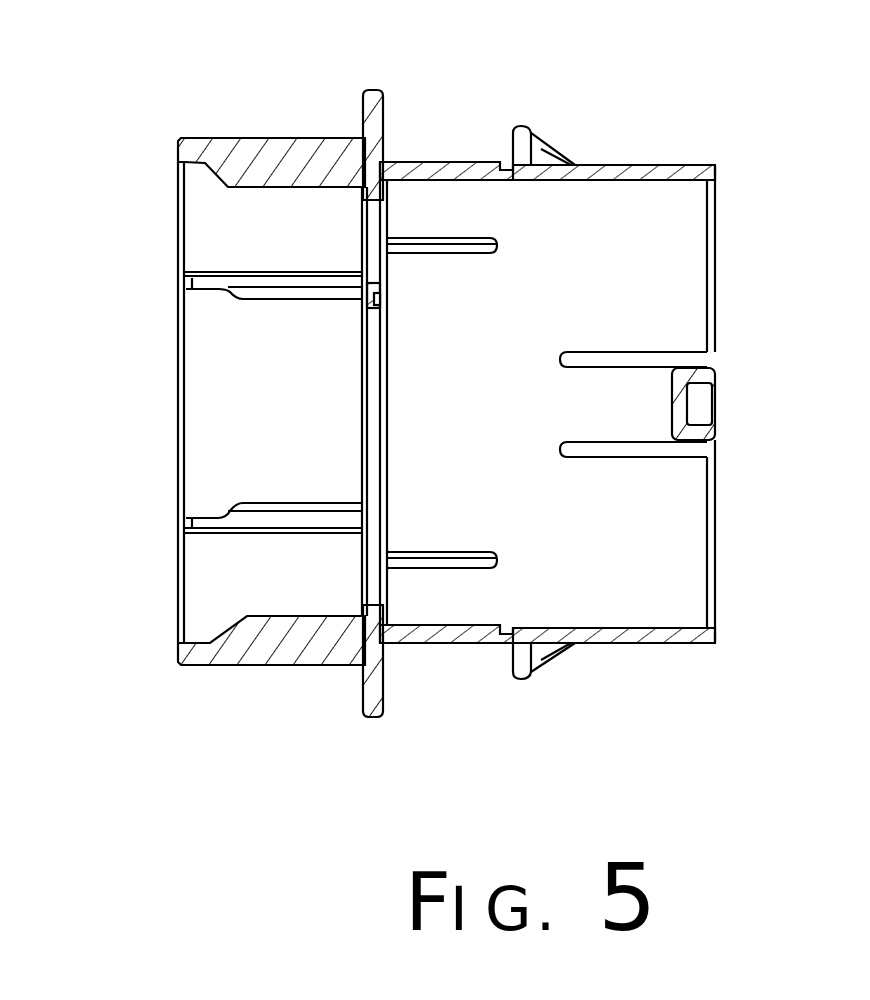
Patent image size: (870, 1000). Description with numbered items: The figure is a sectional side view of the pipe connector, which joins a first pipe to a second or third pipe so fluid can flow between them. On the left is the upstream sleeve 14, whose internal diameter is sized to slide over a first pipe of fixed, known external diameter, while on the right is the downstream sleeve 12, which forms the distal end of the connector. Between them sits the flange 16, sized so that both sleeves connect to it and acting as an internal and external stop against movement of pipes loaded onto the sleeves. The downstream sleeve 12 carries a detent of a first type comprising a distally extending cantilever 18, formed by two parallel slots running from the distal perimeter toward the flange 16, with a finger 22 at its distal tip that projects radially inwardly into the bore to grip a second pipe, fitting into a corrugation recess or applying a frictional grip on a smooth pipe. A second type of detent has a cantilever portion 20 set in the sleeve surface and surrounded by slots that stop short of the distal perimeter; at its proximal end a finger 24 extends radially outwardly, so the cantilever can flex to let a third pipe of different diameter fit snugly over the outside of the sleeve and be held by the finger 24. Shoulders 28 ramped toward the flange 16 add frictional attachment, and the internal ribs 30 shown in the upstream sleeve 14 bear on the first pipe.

The downstream sleeve 12 is at (690, 228).
The upstream sleeve 14 is at (183, 240).
The flange 16 is at (383, 110).
The cantilever 18 is at (645, 423).
The cantilever portion 20 is at (626, 166).
The finger 22 is at (690, 383).
The finger 24 is at (527, 128).
The shoulder 28 is at (445, 252).
The inner flange 30 is at (272, 285).